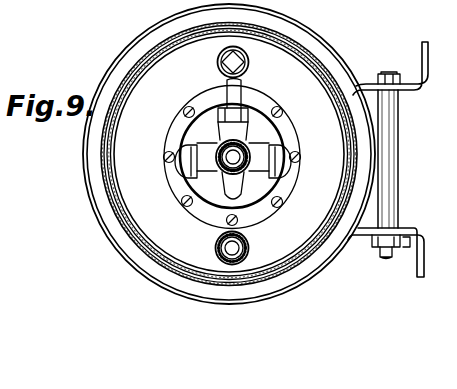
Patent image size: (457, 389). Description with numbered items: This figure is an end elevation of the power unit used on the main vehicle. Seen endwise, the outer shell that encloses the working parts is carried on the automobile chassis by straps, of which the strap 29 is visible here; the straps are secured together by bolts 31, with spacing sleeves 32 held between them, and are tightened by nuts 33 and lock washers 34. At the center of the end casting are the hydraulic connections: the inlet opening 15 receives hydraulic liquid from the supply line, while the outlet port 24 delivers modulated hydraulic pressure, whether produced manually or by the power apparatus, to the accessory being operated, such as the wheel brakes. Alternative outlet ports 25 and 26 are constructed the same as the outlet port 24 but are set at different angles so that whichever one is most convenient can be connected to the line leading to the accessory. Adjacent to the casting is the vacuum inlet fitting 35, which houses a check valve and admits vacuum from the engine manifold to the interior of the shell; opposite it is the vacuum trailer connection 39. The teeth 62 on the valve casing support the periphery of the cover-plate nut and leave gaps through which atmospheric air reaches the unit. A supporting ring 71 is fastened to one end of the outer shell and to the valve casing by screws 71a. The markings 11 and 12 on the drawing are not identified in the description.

The rim width dimension 11 is at (238, 33).
The rim flange dimension 12 is at (165, 38).
The inlet opening 15 is at (231, 162).
The outlet port 24 is at (250, 111).
The alternative outlet port 25 is at (181, 148).
The alternative outlet port 26 is at (290, 131).
The strap 29 is at (425, 44).
The bolt 31 is at (387, 258).
The spacing sleeve 32 is at (392, 203).
The nut 33 is at (373, 248).
The lock washer 34 is at (378, 78).
The vacuum inlet fitting 35 is at (250, 247).
The vacuum trailer connection 39 is at (250, 63).
The teeth 62 is at (13, 5).
The supporting ring 71 is at (96, 0).
The screws 71a is at (63, 13).